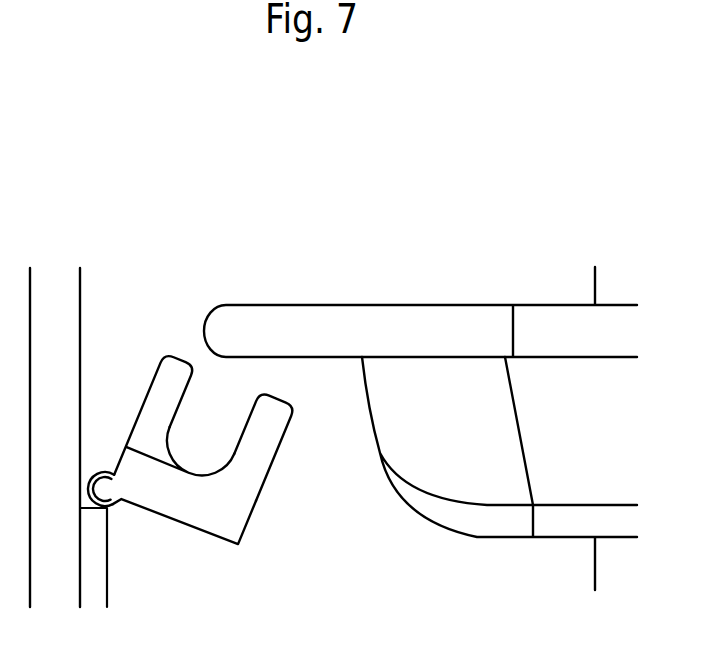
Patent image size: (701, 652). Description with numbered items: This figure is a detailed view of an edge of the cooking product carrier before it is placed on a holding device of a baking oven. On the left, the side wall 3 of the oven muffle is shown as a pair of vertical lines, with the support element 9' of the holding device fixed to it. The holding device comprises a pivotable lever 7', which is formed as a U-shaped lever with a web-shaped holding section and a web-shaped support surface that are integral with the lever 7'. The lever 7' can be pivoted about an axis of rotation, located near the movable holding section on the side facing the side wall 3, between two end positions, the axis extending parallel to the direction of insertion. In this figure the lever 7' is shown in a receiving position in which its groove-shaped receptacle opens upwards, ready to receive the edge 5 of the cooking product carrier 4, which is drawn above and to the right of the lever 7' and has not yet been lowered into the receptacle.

The side wall 3 is at (71, 330).
The cooking product carrier 4 is at (470, 462).
The edge 5 is at (277, 335).
The pivotable lever 7' is at (215, 474).
The support element 9' is at (117, 569).